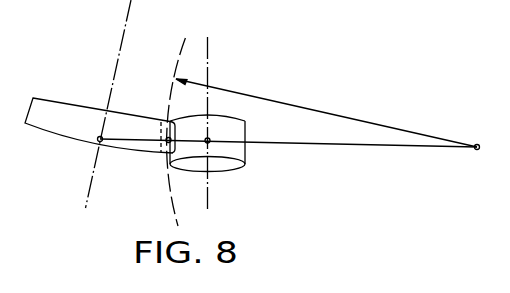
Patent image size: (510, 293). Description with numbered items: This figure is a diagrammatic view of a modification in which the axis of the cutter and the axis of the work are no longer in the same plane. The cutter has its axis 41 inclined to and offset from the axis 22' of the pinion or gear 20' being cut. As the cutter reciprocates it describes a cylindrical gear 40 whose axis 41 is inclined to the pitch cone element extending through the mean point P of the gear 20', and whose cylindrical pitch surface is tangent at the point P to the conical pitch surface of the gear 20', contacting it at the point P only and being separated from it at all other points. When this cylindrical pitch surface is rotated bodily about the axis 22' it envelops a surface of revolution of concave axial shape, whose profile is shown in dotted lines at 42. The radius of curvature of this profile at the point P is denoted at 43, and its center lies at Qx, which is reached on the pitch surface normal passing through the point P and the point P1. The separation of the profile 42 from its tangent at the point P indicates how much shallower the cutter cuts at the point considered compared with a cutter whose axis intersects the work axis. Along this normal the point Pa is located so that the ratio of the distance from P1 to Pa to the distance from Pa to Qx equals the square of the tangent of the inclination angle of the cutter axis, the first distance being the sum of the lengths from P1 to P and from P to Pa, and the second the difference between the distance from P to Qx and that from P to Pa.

The gear 20' is at (100, 111).
The axis of the gear 22' is at (123, 104).
The cylindrical gear 40 is at (243, 133).
The cutter axis 41 is at (208, 60).
The profile of surface of revolution 42 is at (170, 193).
The radius of curvature 43 is at (357, 120).
The mean point P is at (171, 138).
The point Pa is at (212, 131).
The point P1 is at (98, 141).
The center of curvature Qx is at (479, 150).